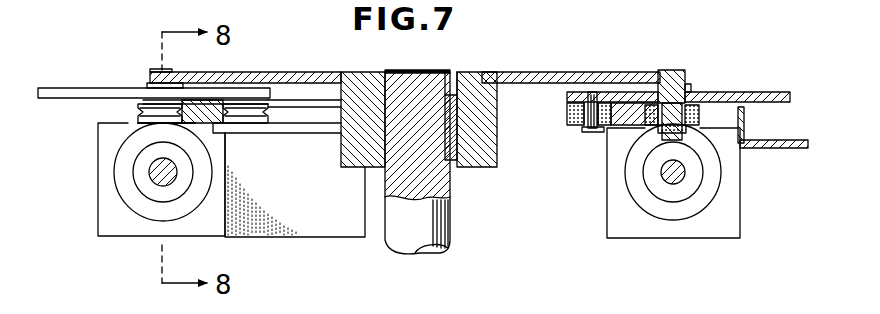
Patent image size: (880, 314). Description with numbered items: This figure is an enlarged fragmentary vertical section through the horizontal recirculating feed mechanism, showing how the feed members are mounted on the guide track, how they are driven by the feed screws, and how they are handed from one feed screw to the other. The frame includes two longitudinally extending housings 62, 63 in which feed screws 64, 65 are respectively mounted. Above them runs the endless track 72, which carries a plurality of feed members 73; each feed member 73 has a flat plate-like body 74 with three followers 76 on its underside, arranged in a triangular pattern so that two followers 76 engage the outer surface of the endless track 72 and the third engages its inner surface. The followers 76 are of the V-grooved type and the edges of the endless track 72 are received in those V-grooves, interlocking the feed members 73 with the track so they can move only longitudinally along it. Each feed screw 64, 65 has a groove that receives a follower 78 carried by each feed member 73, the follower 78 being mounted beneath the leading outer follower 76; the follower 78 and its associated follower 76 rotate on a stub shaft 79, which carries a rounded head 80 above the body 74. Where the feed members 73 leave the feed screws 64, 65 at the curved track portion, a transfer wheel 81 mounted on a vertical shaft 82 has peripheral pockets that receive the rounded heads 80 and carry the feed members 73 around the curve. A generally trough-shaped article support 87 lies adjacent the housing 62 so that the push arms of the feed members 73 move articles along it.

The housing 62 is at (640, 228).
The housing 63 is at (303, 231).
The feed screw 64 is at (683, 205).
The feed screw 65 is at (143, 203).
The endless track 72 is at (201, 126).
The feed member 73 is at (115, 88).
The body 74 is at (758, 92).
The follower 76 is at (141, 110).
The follower 78 is at (668, 130).
The stub shaft 79 is at (688, 98).
The rounded head 80 is at (686, 80).
The transfer wheel 81 is at (542, 74).
The vertical shaft 82 is at (450, 230).
The article support 87 is at (769, 150).